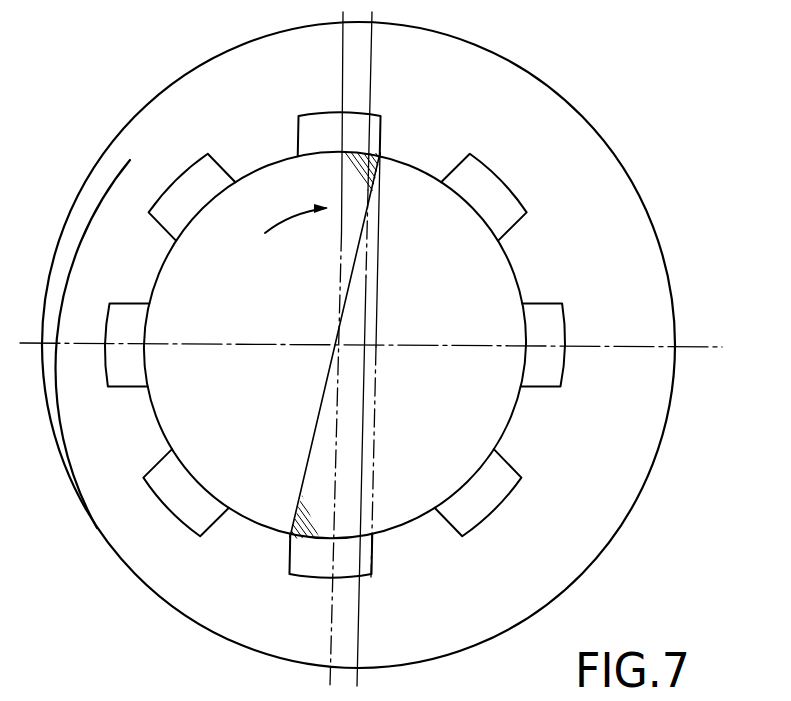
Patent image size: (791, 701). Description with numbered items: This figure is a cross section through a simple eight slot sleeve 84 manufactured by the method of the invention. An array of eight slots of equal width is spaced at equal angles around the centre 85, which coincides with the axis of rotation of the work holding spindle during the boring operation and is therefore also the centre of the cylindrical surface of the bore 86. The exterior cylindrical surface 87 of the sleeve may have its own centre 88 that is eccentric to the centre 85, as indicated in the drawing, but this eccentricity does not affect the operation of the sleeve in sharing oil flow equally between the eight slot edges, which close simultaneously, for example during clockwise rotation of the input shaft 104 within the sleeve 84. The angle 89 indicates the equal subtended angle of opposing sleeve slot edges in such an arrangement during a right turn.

The eight slot sleeve 84 is at (638, 404).
The centre 85 is at (336, 348).
The bore 86 is at (514, 272).
The exterior cylindrical surface 87 is at (96, 529).
The centre of exterior cylindrical surface 88 is at (378, 327).
The angle 89 is at (350, 279).
The input shaft 104 is at (480, 418).